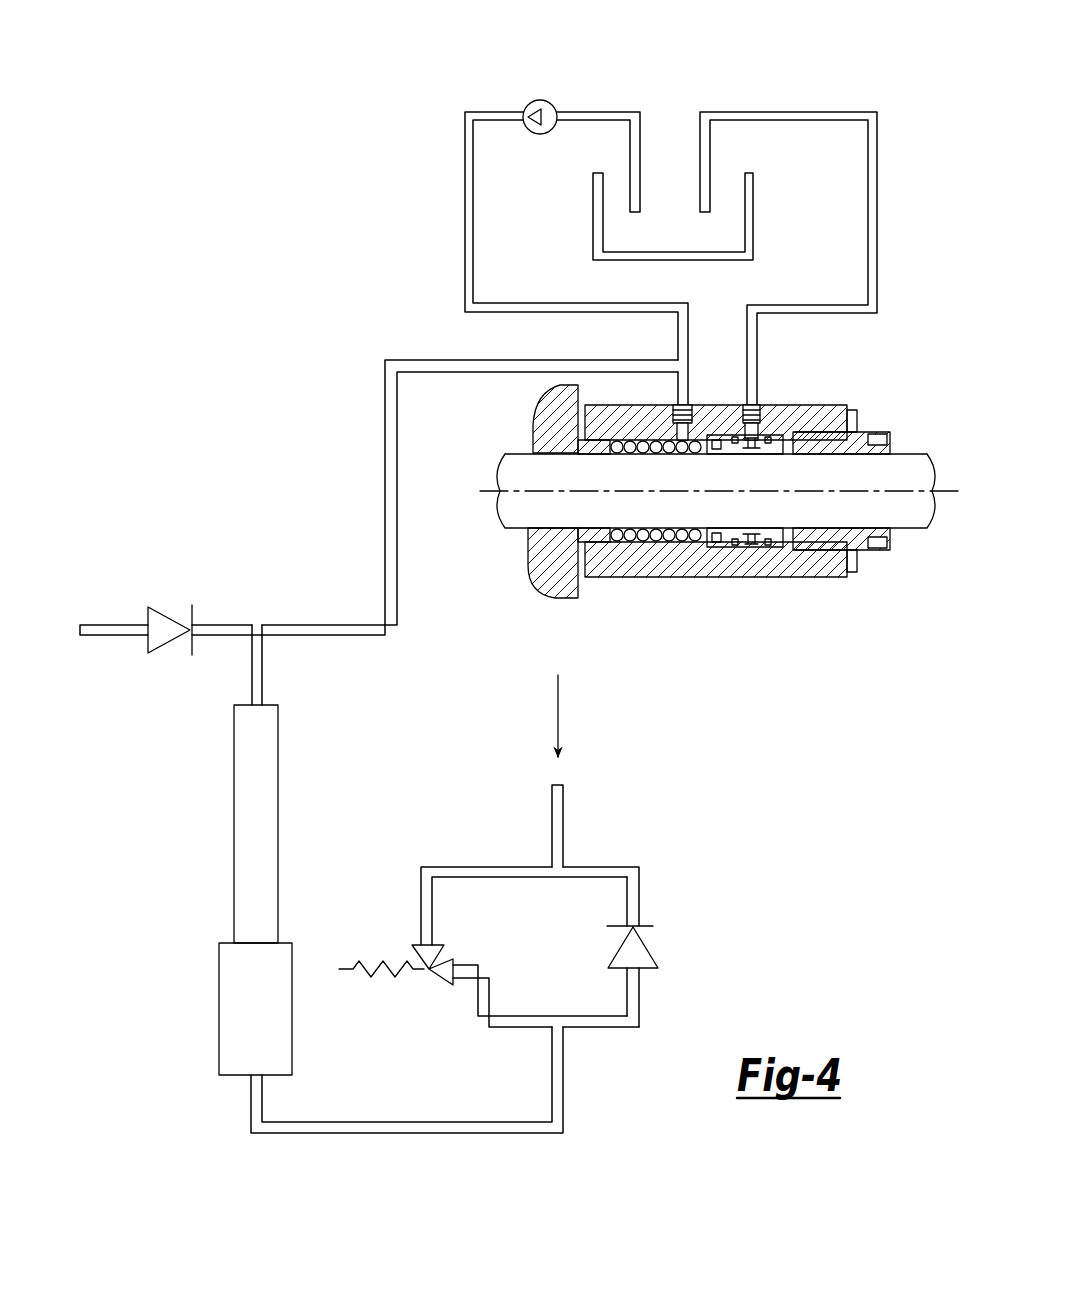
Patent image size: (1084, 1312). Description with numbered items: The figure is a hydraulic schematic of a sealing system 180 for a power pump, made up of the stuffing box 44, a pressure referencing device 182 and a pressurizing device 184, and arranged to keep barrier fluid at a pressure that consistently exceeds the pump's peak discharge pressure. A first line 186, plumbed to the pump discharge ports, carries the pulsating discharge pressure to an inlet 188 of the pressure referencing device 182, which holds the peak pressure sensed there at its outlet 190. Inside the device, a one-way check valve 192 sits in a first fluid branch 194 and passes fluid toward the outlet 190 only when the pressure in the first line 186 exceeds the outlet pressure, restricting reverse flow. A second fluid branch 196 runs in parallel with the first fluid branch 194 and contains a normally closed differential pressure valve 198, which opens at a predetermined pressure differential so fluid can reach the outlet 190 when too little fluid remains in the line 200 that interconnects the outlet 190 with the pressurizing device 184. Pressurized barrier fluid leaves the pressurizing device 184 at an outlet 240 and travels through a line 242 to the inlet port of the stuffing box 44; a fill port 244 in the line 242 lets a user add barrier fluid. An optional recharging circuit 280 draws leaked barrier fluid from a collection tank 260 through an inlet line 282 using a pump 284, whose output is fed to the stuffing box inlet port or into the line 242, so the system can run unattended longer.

The stuffing box 44 is at (812, 400).
The sealing system 180 is at (383, 208).
The pressure referencing device 182 is at (530, 885).
The pressurizing device 184 is at (203, 988).
The first line 186 is at (553, 828).
The inlet 188 is at (572, 858).
The outlet 190 is at (535, 1044).
The one-way check valve 192 is at (652, 915).
The first fluid branch 194 is at (640, 888).
The second fluid branch 196 is at (422, 866).
The differential pressure valve 198 is at (406, 931).
The line 200 is at (414, 1135).
The outlet 240 is at (265, 705).
The line 242 is at (385, 480).
The fill port 244 is at (187, 627).
The collection tank 260 is at (593, 237).
The recharging circuit 280 is at (671, 218).
The inlet line 282 is at (630, 167).
The pump 284 is at (552, 105).